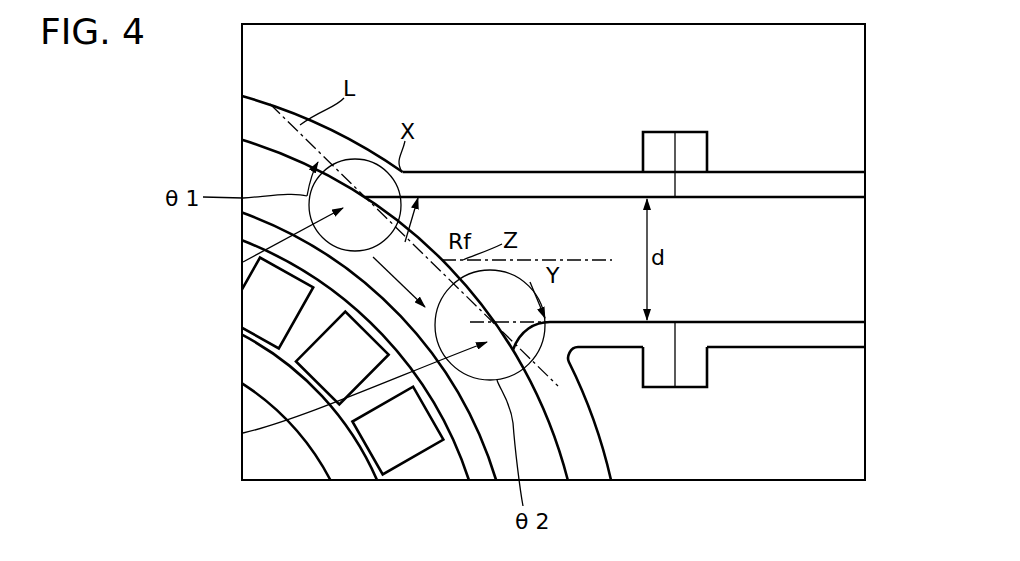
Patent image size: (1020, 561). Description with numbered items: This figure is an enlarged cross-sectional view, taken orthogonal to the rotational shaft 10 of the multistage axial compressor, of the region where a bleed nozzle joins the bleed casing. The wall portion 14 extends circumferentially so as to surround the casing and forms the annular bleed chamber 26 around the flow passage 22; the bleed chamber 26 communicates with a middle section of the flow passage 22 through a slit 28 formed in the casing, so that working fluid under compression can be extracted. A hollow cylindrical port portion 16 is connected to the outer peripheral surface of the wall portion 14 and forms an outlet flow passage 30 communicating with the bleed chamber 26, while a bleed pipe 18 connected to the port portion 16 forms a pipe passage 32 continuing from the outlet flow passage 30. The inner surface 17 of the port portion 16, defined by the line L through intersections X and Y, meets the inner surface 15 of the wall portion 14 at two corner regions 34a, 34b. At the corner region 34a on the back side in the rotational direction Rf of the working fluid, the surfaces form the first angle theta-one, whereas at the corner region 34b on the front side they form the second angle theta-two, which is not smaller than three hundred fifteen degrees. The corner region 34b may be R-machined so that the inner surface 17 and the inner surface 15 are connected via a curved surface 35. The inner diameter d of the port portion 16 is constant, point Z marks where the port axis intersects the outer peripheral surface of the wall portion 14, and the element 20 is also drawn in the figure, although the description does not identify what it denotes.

The rotational shaft 10 is at (258, 366).
The wall portion 14 is at (258, 122).
The inner surface of the wall portion 15 is at (293, 163).
The port portion 16 is at (523, 172).
The inner surface of the port portion 17 is at (560, 212).
The bleed pipe 18 is at (758, 172).
The permanent magnet 20 is at (258, 298).
The flow passage 22 is at (319, 309).
The bleed chamber 26 is at (405, 242).
The slit 28 is at (258, 230).
The outlet flow passage 30 is at (589, 241).
The pipe passage 32 is at (768, 261).
The corner region 34a is at (243, 262).
The corner region 34b is at (243, 433).
The curved surface 35 is at (540, 318).